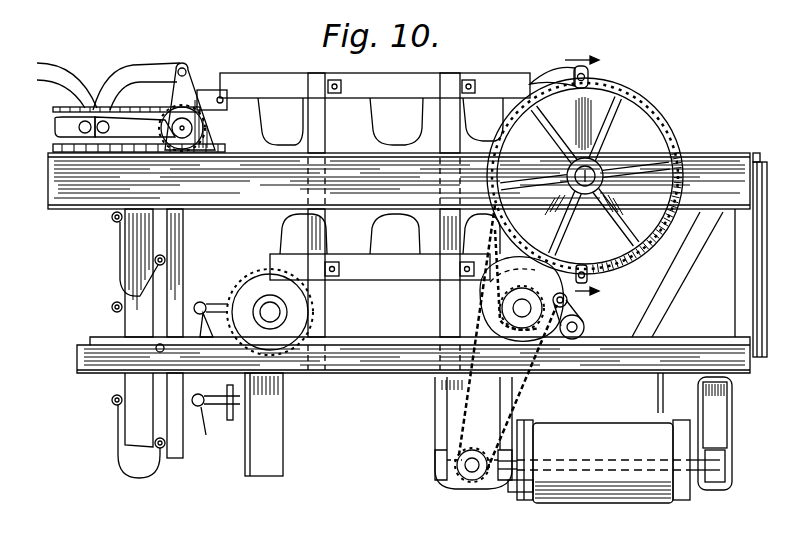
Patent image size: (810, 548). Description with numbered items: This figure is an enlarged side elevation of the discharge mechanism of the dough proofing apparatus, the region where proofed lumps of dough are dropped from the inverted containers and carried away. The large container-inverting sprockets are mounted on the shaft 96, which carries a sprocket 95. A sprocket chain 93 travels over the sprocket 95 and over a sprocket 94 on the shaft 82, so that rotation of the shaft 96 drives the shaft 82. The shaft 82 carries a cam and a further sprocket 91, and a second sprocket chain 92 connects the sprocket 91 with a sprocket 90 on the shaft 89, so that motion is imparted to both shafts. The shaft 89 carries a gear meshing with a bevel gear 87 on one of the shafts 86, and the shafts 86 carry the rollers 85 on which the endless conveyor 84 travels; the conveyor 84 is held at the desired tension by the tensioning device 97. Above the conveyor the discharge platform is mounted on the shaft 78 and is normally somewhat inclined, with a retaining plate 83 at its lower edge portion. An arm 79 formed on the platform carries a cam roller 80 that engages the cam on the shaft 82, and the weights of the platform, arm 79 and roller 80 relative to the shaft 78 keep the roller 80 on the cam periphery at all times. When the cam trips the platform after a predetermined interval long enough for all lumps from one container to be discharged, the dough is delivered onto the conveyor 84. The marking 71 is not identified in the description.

The direction arrow 71 is at (582, 177).
The shaft 78 is at (584, 327).
The arm 79 is at (583, 308).
The cam roller 80 is at (590, 280).
The shaft 82 is at (514, 308).
The retaining plate 83 is at (673, 290).
The endless conveyor 84 is at (611, 461).
The rollers 85 is at (535, 440).
The shafts 86 is at (517, 483).
The bevel gear 87 is at (483, 287).
The shaft 89 is at (470, 472).
The sprocket 90 is at (477, 453).
The sprocket 91 is at (547, 352).
The sprocket chain 92 is at (448, 433).
The sprocket chain 93 is at (600, 166).
The sprocket 94 is at (517, 280).
The sprocket 95 is at (625, 110).
The shaft 96 is at (592, 170).
The tensioning device 97 is at (678, 498).